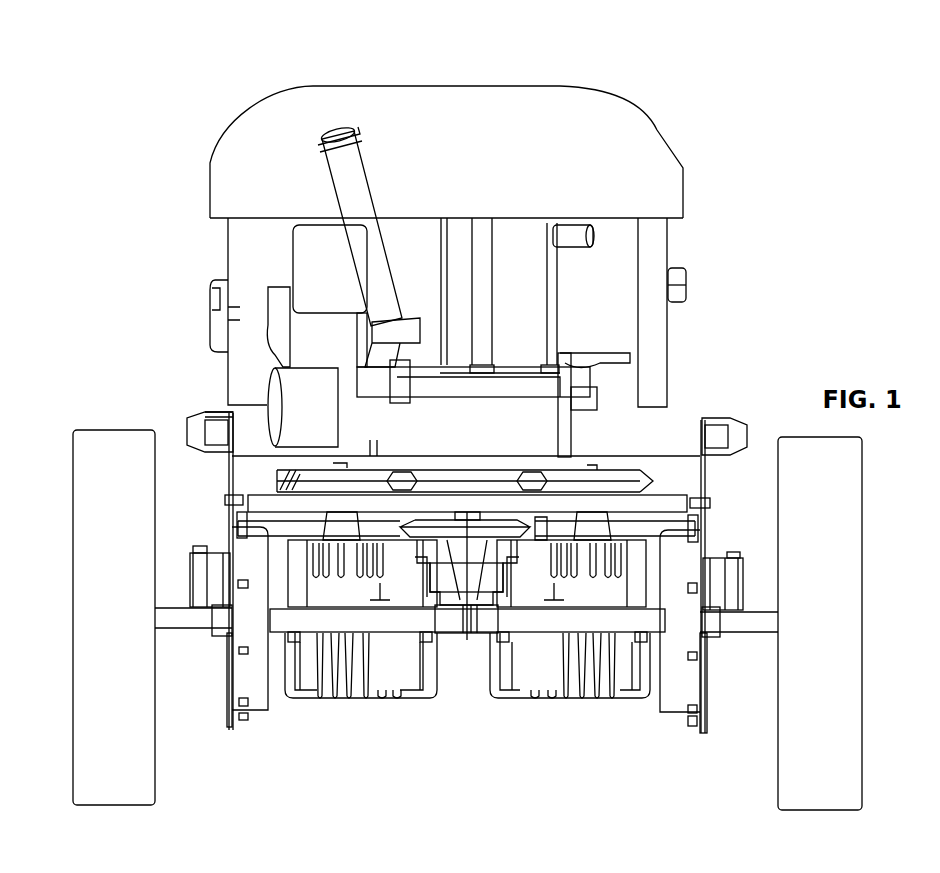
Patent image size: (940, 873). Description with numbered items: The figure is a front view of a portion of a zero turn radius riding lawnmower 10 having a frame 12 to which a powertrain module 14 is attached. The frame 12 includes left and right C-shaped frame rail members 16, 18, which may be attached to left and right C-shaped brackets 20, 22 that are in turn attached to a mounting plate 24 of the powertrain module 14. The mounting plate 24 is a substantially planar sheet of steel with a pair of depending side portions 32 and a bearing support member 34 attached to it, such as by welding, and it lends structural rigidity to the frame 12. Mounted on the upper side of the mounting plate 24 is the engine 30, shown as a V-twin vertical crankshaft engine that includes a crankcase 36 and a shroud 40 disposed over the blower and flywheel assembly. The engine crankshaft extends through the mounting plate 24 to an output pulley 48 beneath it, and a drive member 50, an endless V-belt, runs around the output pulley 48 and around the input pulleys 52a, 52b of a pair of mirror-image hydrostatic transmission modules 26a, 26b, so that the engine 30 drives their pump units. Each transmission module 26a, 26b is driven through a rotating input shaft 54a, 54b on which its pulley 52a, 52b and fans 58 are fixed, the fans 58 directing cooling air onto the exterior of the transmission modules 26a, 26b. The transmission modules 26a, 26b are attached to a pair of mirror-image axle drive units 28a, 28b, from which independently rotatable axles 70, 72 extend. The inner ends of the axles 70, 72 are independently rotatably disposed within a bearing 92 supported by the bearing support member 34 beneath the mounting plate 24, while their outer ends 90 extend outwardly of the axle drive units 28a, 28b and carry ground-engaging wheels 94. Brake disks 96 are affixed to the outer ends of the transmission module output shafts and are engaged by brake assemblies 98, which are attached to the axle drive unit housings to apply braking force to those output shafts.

The riding lawnmower 10 is at (110, 81).
The frame 12 is at (174, 418).
The powertrain module 14 is at (757, 233).
The left C-shaped frame rail member 16 is at (186, 434).
The right C-shaped frame rail member 18 is at (746, 433).
The left C-shaped bracket 20 is at (232, 413).
The right C-shaped bracket 22 is at (703, 418).
The mounting plate 24 is at (662, 476).
The hydrostatic transmission module 26a is at (339, 720).
The hydrostatic transmission module 26b is at (596, 722).
The axle drive unit 28a is at (253, 722).
The axle drive unit 28b is at (673, 725).
The engine 30 is at (208, 180).
The depending side portions 32 is at (700, 476).
The bearing support member 34 is at (480, 633).
The crankcase 36 is at (503, 280).
The shroud 40 is at (658, 133).
The output pulley 48 is at (512, 458).
The drive member 50 is at (277, 480).
The input pulley 52a is at (388, 452).
The input pulley 52b is at (622, 460).
The input shaft 54a is at (362, 559).
The input shaft 54b is at (571, 559).
The fans 58 is at (677, 490).
The axle 70 is at (407, 622).
The axle 72 is at (538, 623).
The outer ends 90 is at (182, 622).
The bearing 92 is at (445, 623).
The ground-engaging wheels 94 is at (95, 657).
The brake disks 96 is at (221, 657).
The brake assemblies 98 is at (186, 545).